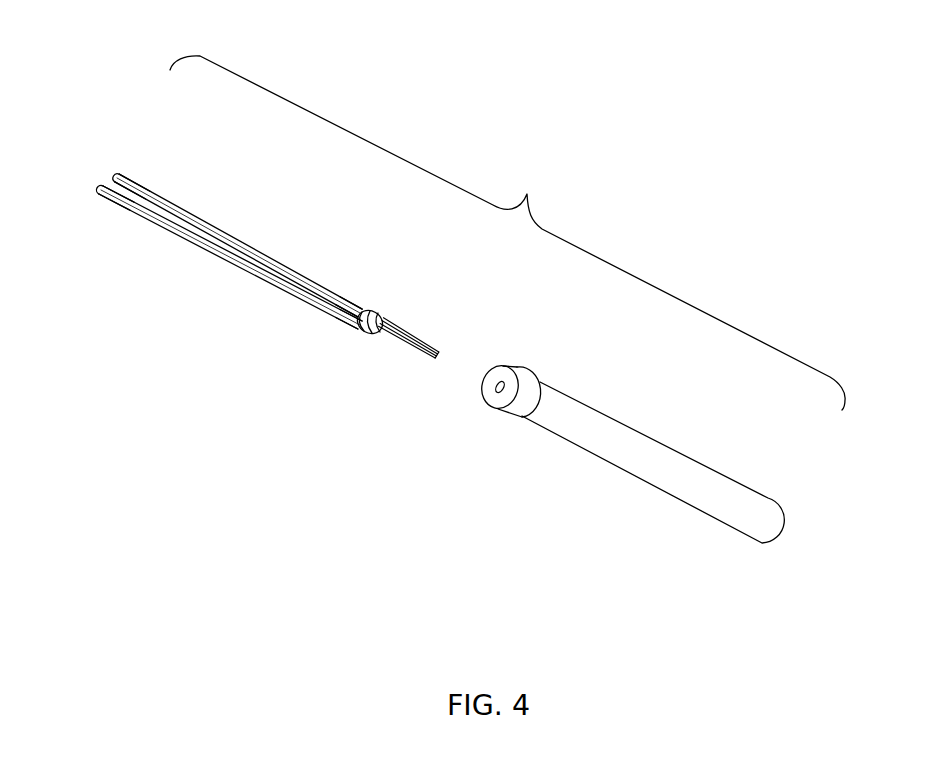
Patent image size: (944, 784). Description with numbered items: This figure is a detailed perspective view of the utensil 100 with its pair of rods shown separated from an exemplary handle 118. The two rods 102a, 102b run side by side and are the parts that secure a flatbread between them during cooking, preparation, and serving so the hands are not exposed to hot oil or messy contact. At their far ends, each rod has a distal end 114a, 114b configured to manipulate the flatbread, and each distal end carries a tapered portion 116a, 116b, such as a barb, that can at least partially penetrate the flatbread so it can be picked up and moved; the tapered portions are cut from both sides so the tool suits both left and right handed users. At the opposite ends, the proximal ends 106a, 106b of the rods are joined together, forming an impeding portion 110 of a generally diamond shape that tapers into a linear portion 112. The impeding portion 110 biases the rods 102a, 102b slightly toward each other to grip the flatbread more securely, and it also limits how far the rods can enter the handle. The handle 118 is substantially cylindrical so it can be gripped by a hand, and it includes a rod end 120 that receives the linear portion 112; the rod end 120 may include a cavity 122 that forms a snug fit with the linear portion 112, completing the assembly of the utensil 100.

The utensil 100 is at (507, 233).
The rod 102a is at (243, 242).
The rod 102b is at (242, 266).
The proximal end 106a is at (352, 300).
The proximal end 106b is at (340, 319).
The impeding portion 110 is at (381, 316).
The linear portion 112 is at (417, 343).
The distal end 114a is at (136, 188).
The distal end 114b is at (126, 207).
The tapered portion 116a is at (115, 179).
The tapered portion 116b is at (101, 188).
The handle 118 is at (632, 471).
The rod end 120 is at (498, 407).
The cavity 122 is at (494, 384).